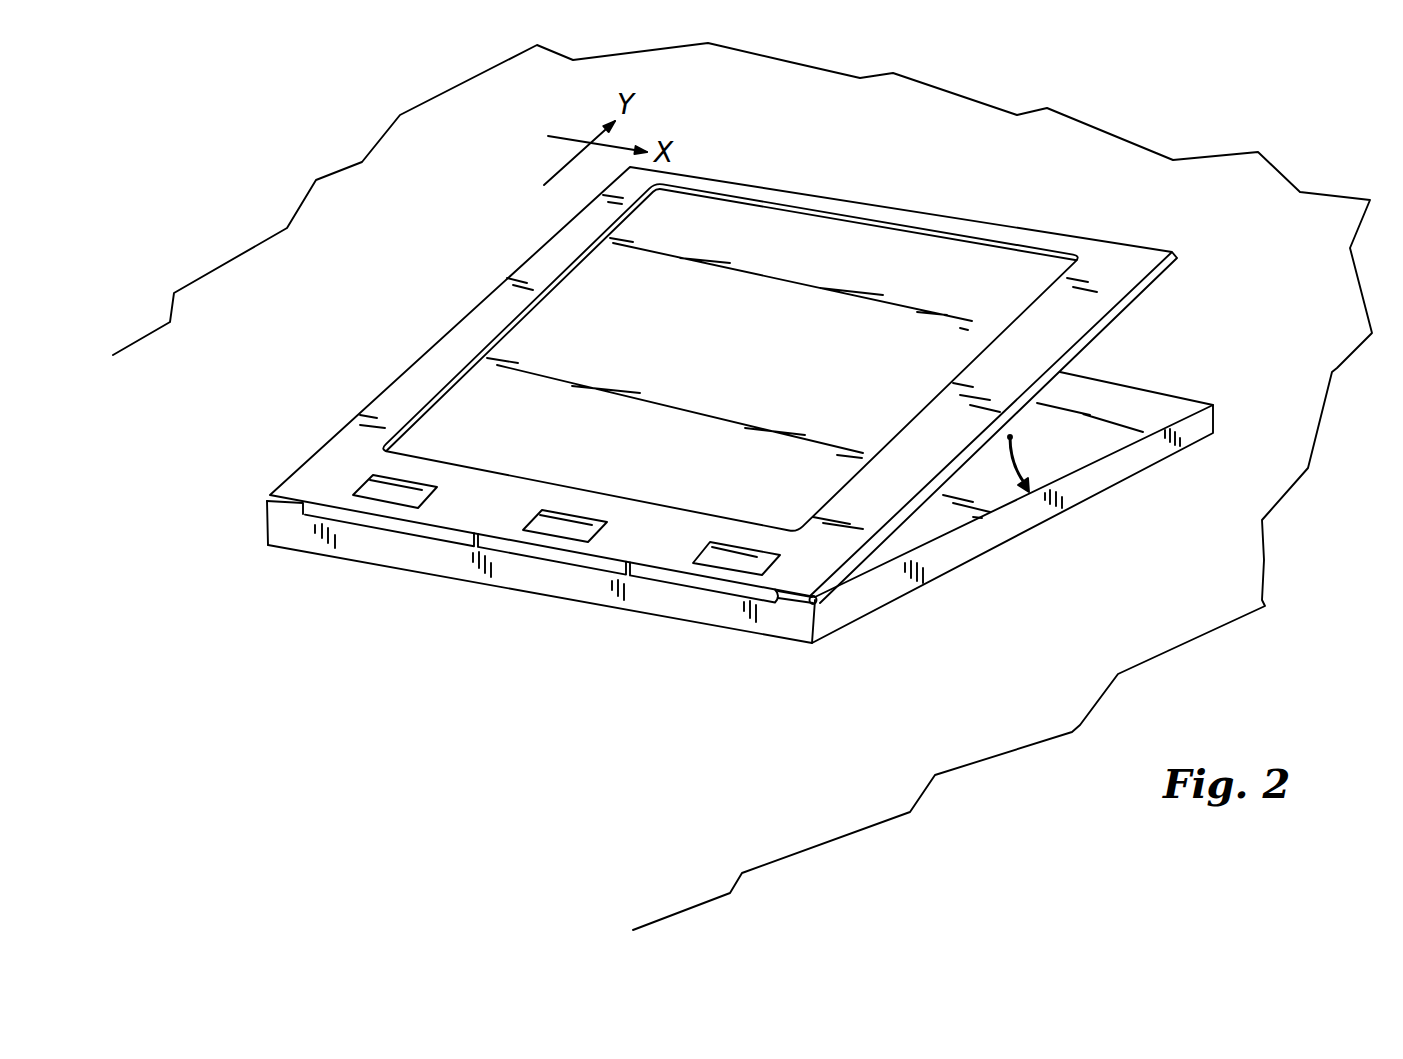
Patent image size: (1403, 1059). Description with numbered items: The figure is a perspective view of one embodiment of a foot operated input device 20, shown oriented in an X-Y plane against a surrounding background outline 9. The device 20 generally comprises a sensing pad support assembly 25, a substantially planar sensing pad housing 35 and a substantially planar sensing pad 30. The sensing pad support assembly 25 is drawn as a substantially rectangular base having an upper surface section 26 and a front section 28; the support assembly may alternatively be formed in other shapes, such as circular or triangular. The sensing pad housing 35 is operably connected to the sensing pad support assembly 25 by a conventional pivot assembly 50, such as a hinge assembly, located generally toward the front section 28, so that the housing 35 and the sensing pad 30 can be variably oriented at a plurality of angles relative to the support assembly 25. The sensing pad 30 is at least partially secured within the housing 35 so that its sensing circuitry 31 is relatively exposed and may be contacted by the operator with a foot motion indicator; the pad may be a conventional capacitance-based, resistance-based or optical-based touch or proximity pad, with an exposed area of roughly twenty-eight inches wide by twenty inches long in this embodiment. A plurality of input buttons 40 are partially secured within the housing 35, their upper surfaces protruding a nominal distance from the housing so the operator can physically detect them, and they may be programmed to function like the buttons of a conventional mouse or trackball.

The printing device housing / support structure 9 is at (945, 742).
The foot operated input device 20 is at (464, 153).
The sensing pad support assembly 25 is at (1222, 437).
The upper surface section 26 is at (1100, 398).
The front section 28 is at (670, 605).
The sensing pad 30 is at (724, 226).
The sensing circuitry 31 is at (870, 242).
The sensing pad housing 35 is at (539, 266).
The input buttons 40 is at (387, 492).
The pivot assembly 50 is at (287, 507).